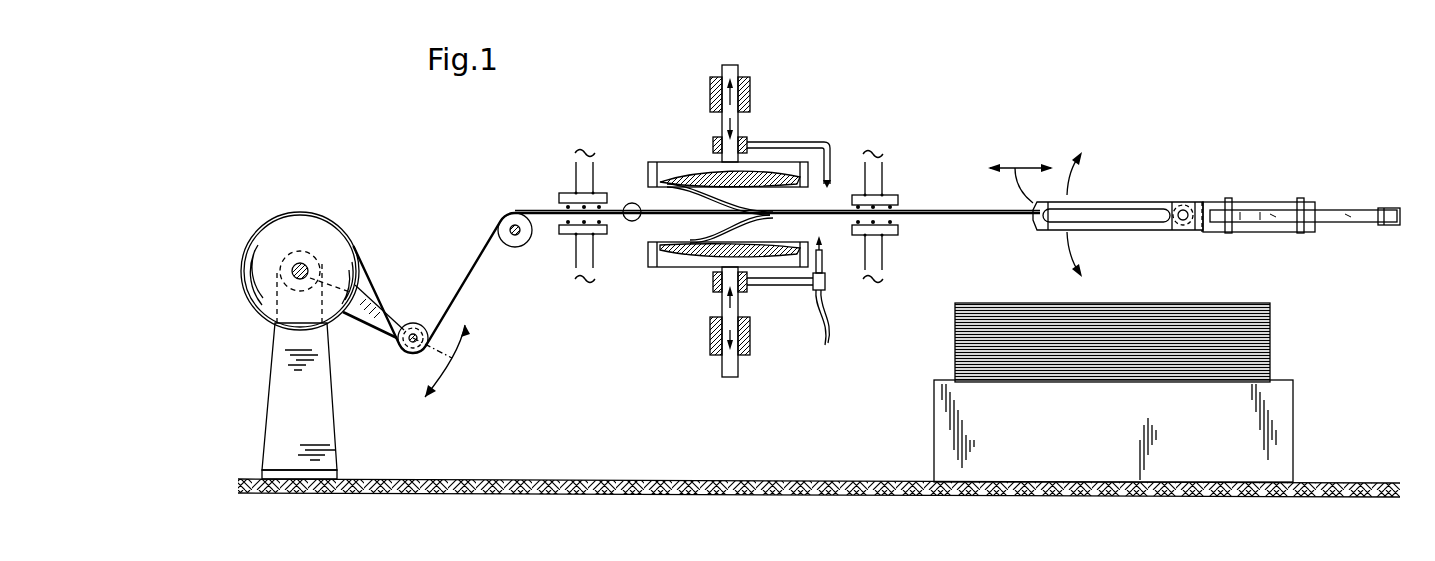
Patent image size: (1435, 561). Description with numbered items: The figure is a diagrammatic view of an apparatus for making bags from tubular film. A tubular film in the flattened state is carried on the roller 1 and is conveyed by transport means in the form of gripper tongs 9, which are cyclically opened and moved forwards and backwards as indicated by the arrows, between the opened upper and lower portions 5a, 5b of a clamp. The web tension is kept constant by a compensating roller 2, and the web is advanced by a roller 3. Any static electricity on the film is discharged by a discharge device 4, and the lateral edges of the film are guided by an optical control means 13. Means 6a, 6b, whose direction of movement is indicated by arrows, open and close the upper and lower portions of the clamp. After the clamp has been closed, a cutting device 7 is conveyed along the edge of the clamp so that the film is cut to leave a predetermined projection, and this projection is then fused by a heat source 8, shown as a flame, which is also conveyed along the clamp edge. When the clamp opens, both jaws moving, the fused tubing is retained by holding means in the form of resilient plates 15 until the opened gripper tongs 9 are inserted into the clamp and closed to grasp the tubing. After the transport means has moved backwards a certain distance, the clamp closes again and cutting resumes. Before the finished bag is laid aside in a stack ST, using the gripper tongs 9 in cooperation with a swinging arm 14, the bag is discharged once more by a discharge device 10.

The roller 1 is at (333, 233).
The compensating roller 2 is at (425, 322).
The roller 3 is at (522, 247).
The discharge device 4 is at (562, 192).
The upper portion of clamp 5a is at (660, 162).
The lower portion of clamp 5b is at (672, 260).
The opening and closing means for upper clamp portion 6a is at (738, 65).
The opening and closing means for lower clamp portion 6b is at (738, 367).
The cutting device 7 is at (813, 141).
The heat source 8 is at (825, 285).
The gripper tongs 9 is at (1128, 202).
The discharge device 10 is at (892, 192).
The optical control means 13 is at (632, 221).
The swinging arm 14 is at (1250, 215).
The resilient plates 15 is at (742, 207).
The stack ST is at (1268, 348).